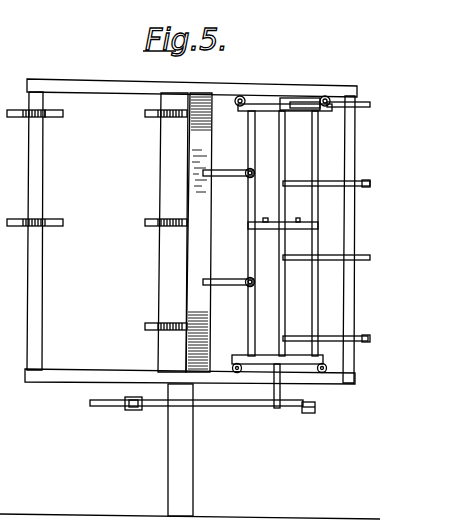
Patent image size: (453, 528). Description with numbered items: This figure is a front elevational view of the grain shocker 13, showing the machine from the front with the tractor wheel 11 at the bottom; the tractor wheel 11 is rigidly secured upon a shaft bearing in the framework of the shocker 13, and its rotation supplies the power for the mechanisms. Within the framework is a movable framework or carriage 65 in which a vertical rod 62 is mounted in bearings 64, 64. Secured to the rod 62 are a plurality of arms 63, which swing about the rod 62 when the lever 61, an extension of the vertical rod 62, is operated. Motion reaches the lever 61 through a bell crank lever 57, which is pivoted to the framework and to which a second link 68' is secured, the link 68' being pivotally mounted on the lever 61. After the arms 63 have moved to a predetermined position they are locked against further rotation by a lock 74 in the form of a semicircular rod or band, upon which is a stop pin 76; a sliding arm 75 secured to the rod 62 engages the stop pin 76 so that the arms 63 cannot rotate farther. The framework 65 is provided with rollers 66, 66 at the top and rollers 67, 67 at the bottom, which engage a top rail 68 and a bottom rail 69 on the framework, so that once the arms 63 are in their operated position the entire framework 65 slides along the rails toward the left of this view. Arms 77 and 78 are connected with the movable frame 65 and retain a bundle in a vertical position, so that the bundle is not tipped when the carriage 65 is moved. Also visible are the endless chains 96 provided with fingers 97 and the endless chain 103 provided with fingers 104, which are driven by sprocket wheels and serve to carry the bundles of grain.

The tractor wheel 11 is at (182, 486).
The shocker 13 is at (60, 376).
The bell crank lever 57 is at (107, 404).
The lever 61 is at (298, 409).
The vertical rod 62 is at (277, 298).
The arms 63 is at (370, 107).
The bearings 64 is at (277, 115).
The framework 65 is at (252, 152).
The rollers 66 is at (318, 100).
The rollers 67 is at (239, 373).
The rail 68 is at (311, 86).
The second link 68' is at (196, 419).
The rail 69 is at (348, 384).
The lock 74 is at (268, 229).
The sliding arm 75 is at (268, 214).
The stop pin 76 is at (298, 219).
The arm 77 is at (234, 176).
The arm 78 is at (236, 285).
The endless chain 96 is at (156, 230).
The fingers 97 is at (148, 118).
The endless chain 103 is at (45, 117).
The fingers 104 is at (63, 113).